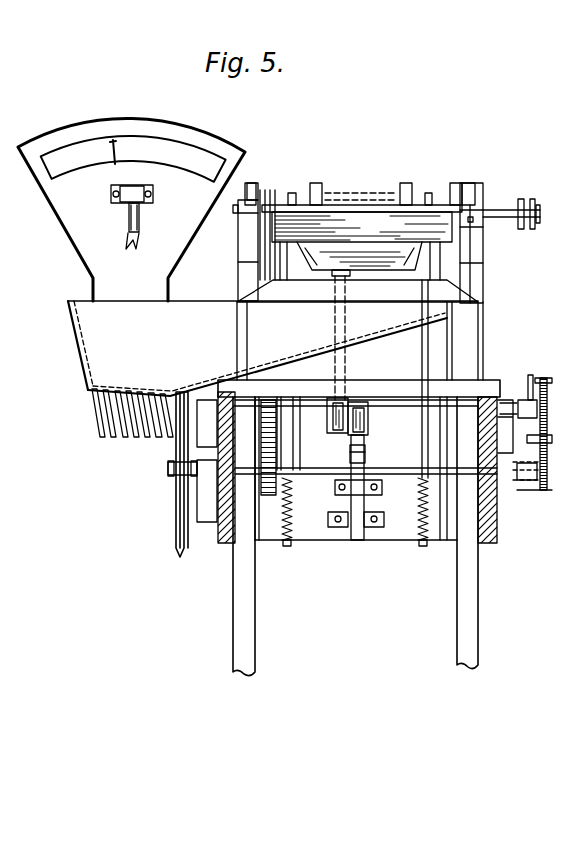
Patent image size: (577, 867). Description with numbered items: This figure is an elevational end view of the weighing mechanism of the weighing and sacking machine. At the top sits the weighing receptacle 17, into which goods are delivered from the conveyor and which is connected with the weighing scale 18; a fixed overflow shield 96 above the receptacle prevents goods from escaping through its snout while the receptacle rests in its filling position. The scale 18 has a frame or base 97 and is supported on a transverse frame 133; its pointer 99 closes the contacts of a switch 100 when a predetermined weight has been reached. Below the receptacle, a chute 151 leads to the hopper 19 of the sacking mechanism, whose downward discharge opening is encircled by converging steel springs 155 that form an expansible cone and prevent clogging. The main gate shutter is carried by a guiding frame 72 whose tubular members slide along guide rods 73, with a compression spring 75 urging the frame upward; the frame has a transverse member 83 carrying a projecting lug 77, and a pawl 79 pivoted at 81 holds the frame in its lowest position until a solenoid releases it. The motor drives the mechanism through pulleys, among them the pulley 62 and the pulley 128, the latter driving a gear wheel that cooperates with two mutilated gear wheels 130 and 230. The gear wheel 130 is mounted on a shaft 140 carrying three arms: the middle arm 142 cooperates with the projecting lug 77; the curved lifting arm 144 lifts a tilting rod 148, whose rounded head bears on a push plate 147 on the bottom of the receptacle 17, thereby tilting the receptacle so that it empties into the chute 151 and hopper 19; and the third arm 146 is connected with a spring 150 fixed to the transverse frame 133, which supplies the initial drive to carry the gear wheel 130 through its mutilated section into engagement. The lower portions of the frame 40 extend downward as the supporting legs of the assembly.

The weighing receptacle 17 is at (395, 258).
The weighing scale 18 is at (62, 199).
The chute and hopper 19 is at (98, 358).
The frame legs 40 is at (470, 605).
The pulley 62 is at (542, 192).
The guiding frame 72 is at (425, 353).
The guide rods 73 is at (422, 548).
The spring 75 is at (294, 520).
The projecting lug 77 is at (362, 448).
The pawl 79 is at (372, 497).
The pivot 81 is at (349, 528).
The transverse member 83 is at (313, 450).
The overflow shield 96 is at (402, 215).
The scale frame 97 is at (447, 298).
The pointer 99 is at (117, 148).
The switch 100 is at (128, 200).
The pulley 128 is at (176, 521).
The mutilated gear wheel 130 is at (254, 410).
The transverse frame 133 is at (492, 540).
The shaft 140 is at (440, 395).
The arm 142 is at (372, 404).
The curved lifting arm 144 is at (352, 396).
The third arm 146 is at (523, 398).
The push plate 147 is at (348, 277).
The tilting rod 148 is at (342, 362).
The spring 150 is at (560, 400).
The chute 151 is at (398, 338).
The steel springs 155 is at (97, 424).
The mutilated gear wheel 230 is at (267, 500).